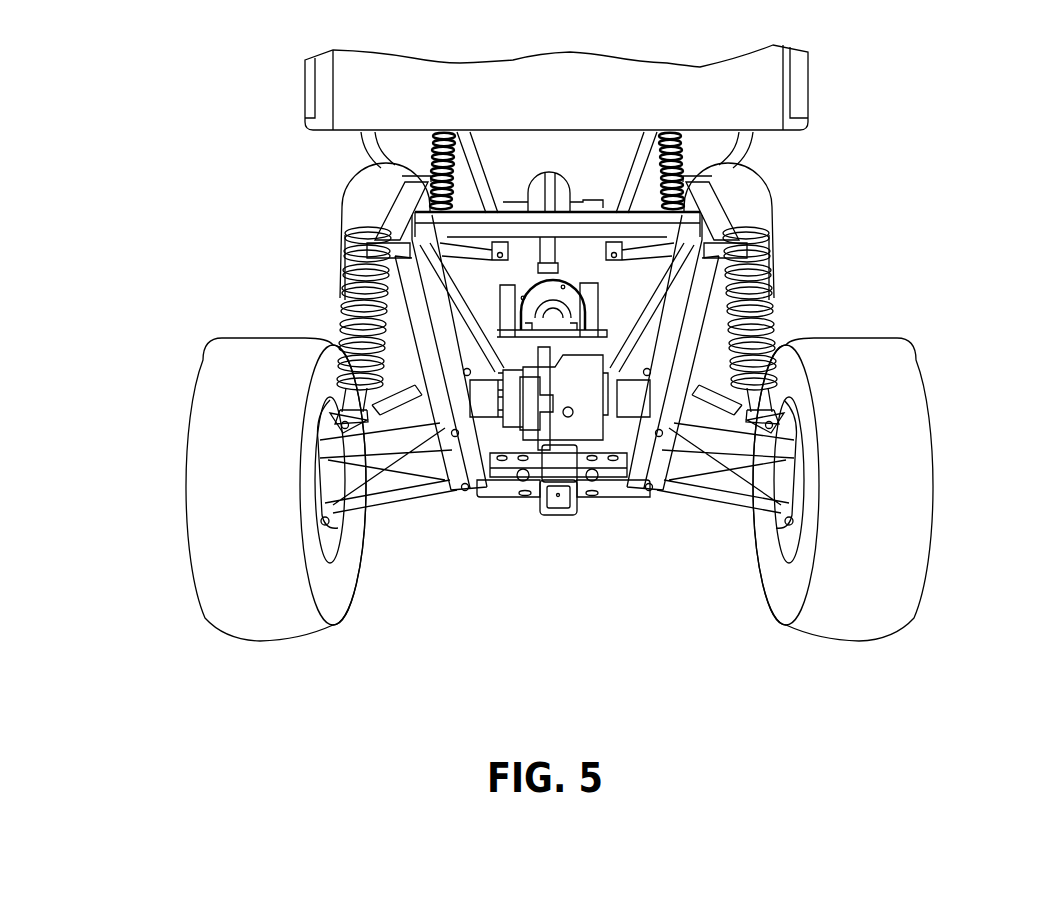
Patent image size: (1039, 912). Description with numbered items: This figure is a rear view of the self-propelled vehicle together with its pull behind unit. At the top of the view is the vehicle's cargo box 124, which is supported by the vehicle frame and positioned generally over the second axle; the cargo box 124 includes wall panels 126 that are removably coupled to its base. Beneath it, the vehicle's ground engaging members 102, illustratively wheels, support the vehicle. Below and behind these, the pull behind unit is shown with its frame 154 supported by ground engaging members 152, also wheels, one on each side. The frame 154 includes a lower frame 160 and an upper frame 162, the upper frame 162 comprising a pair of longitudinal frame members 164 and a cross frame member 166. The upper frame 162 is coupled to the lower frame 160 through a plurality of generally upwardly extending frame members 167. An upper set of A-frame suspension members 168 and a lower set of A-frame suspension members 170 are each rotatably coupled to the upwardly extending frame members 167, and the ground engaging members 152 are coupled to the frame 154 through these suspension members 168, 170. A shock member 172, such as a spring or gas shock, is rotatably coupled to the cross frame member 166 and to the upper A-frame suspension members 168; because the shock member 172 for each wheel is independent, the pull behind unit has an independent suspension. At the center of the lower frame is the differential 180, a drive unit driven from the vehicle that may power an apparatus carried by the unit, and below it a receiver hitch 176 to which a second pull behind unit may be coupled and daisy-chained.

The ground engaging members 102 is at (353, 191).
The cargo box 124 is at (820, 73).
The wall panels 126 is at (592, 105).
The ground engaging members 152 is at (210, 578).
The frame 154 is at (735, 668).
The lower frame 160 is at (604, 484).
The upper frame 162 is at (720, 203).
The longitudinal frame members 164 is at (385, 233).
The cross frame member 166 is at (745, 283).
The generally upwardly extending frame members 167 is at (448, 318).
The upper set of A-frame suspension members 168 is at (385, 445).
The lower set of A-frame suspension members 170 is at (437, 500).
The shock member 172 is at (318, 312).
The receiver hitch 176 is at (557, 535).
The differential 180 is at (536, 472).